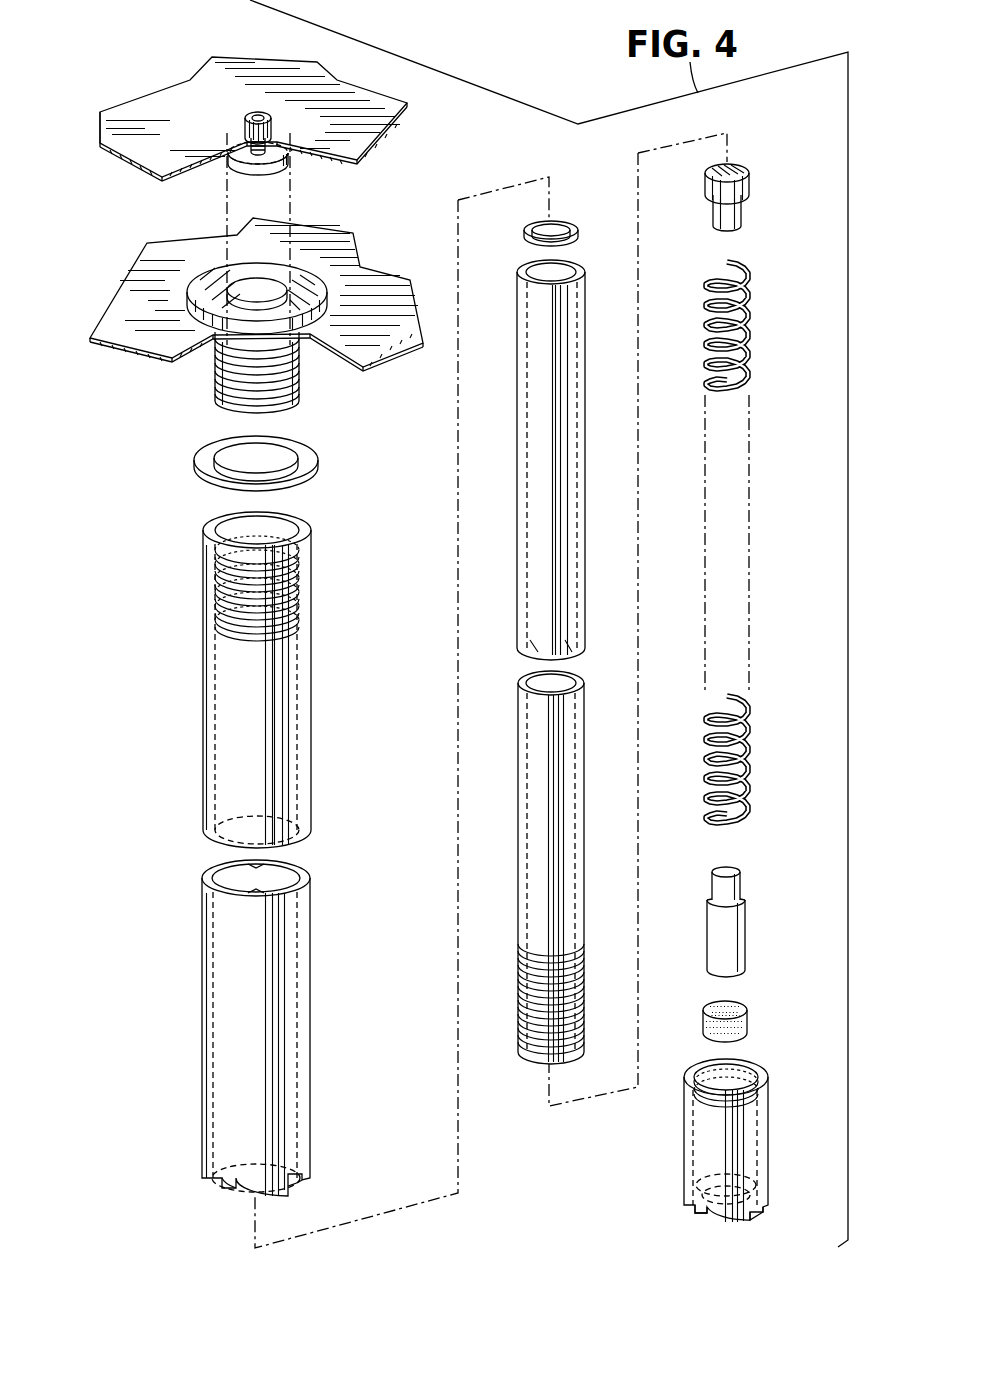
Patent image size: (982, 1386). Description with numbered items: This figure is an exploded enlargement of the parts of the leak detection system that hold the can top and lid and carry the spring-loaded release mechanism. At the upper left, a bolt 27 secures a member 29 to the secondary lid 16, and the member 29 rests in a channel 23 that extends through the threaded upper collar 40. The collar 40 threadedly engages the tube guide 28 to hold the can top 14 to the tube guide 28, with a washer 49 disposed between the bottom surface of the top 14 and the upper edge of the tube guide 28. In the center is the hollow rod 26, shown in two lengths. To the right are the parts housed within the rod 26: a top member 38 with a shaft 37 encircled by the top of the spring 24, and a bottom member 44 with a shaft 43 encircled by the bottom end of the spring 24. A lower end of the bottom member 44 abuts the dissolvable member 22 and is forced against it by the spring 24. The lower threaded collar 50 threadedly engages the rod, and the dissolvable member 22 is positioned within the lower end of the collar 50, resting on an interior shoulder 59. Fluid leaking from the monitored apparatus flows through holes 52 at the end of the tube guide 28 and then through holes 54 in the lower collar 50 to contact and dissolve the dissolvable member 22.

The top 14 is at (368, 278).
The secondary lid 16 is at (423, 135).
The dissolvable member 22 is at (752, 1020).
The channel 23 is at (262, 287).
The spring 24 is at (752, 330).
The hollow rod 26 is at (578, 418).
The bolt 27 is at (245, 118).
The tube guide 28 is at (300, 684).
The member 29 is at (248, 165).
The shaft 37 is at (745, 210).
The top member 38 is at (750, 183).
The threaded upper collar 40 is at (215, 388).
The shaft 43 is at (742, 884).
The bottom member 44 is at (745, 932).
The washer 49 is at (318, 455).
The lower threaded collar 50 is at (690, 1150).
The holes 52 is at (222, 1188).
The holes 54 is at (700, 1216).
The interior shoulder 59 is at (750, 1186).